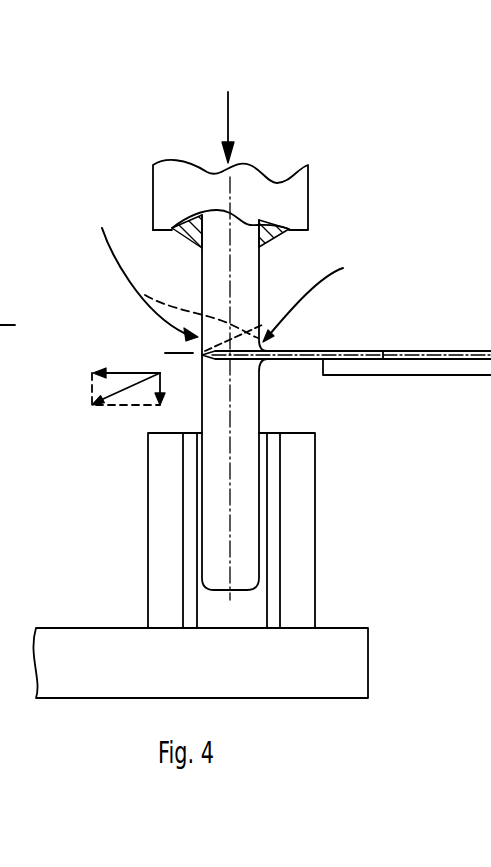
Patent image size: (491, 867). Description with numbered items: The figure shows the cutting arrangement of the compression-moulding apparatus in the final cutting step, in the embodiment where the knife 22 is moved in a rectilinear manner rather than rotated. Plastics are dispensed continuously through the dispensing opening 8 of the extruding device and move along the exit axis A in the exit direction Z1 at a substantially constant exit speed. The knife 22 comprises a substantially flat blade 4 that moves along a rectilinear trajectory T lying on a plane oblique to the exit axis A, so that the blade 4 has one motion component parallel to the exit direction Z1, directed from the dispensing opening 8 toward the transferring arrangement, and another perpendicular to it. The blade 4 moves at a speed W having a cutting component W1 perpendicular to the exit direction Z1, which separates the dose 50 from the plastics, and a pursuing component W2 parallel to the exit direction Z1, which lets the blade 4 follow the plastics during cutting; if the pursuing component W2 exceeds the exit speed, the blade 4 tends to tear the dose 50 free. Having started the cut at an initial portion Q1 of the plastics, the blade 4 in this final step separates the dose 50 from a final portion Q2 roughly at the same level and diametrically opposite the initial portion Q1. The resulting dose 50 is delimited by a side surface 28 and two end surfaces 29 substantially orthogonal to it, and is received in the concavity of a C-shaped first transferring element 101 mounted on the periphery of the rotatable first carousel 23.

The exit direction Z1 is at (230, 132).
The exit axis A is at (230, 203).
The dispensing opening 8 is at (260, 257).
The final portion Q2 is at (140, 270).
The rectilinear trajectory T is at (199, 307).
The cutting component W1 is at (125, 372).
The initial portion Q1 is at (317, 295).
The blade 4 is at (295, 350).
The knife 22 is at (400, 351).
The speed W is at (113, 395).
The pursuing component W2 is at (165, 390).
The dose 50 is at (247, 417).
The side surface 28 is at (260, 489).
The first transferring element 101 is at (298, 522).
The end surface 29 is at (240, 588).
The first carousel 23 is at (337, 663).